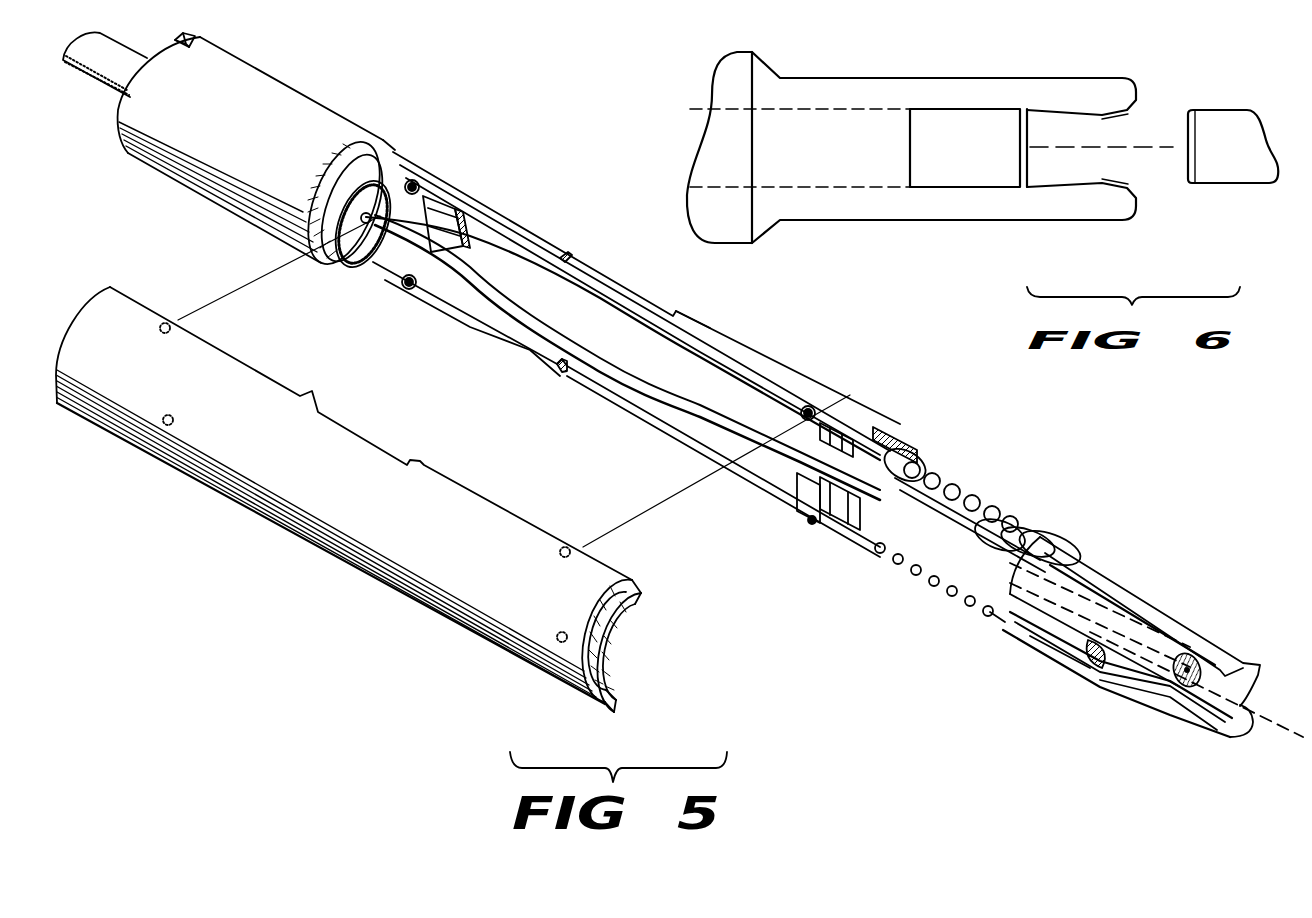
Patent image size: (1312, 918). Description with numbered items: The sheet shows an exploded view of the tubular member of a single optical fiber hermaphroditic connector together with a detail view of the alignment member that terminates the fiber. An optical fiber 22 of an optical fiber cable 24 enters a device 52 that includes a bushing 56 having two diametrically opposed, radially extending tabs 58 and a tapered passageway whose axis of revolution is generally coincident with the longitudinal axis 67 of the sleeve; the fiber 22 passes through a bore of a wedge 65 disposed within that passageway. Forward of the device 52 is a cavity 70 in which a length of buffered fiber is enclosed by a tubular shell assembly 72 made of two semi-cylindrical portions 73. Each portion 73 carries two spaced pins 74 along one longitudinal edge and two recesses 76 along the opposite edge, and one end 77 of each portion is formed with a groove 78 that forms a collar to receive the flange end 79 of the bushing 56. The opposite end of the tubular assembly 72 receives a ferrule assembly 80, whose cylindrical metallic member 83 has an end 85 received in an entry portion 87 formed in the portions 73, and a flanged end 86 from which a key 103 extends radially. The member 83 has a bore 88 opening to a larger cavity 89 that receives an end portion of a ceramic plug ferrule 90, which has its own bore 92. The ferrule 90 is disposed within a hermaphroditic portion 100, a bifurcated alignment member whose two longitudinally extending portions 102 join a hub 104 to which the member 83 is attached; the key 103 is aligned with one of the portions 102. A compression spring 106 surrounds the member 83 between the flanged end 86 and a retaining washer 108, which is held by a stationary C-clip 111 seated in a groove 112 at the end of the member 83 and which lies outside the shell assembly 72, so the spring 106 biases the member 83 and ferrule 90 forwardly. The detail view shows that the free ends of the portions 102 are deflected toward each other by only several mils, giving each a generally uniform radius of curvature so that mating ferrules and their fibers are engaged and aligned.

In FIG. 5, the optical fiber 22 is at (624, 378).
In FIG. 5, the optical fiber cable 24 is at (83, 83).
In FIG. 5, the device 52 is at (306, 98).
In FIG. 5, the bushing 56 is at (350, 130).
In FIG. 5, the tab 58 is at (175, 40).
In FIG. 5, the wedge 65 is at (358, 248).
In FIG. 5, the longitudinal axis 67 is at (1289, 727).
In FIG. 5, the cavity 70 is at (632, 330).
In FIG. 5, the tubular shell assembly 72 is at (708, 318).
In FIG. 5, the semi-cylindrical portion 73 is at (755, 355).
In FIG. 5, the pin 74 is at (418, 185).
In FIG. 5, the recess 76 is at (409, 290).
In FIG. 5, the end 77 is at (420, 172).
In FIG. 5, the groove 78 is at (360, 178).
In FIG. 5, the flange end 79 is at (341, 167).
In FIG. 5, the ferrule assembly 80 is at (1055, 520).
In FIG. 5, the cylindrical metallic member 83 is at (931, 592).
In FIG. 5, the end 85 is at (858, 418).
In FIG. 5, the flanged end 86 is at (988, 614).
In FIG. 5, the entry portion 87 is at (882, 432).
In FIG. 5, the bore 88 is at (932, 488).
In FIG. 5, the cavity 89 is at (1000, 510).
In FIG. 5, the plug ferrule 90 is at (1068, 590).
In FIG. 6, the plug ferrule 90 is at (965, 110).
In FIG. 5, the bore 92 is at (1118, 610).
In FIG. 5, the hermaphroditic portion 100 is at (1078, 657).
In FIG. 6, the hermaphroditic portion 100 is at (828, 78).
In FIG. 5, the longitudinally extending portion 102 is at (1244, 707).
In FIG. 6, the longitudinally extending portion 102 is at (1088, 92).
In FIG. 5, the key 103 is at (1030, 518).
In FIG. 5, the hub 104 is at (1042, 640).
In FIG. 5, the compression spring 106 is at (978, 485).
In FIG. 5, the retaining washer 108 is at (930, 450).
In FIG. 5, the C-clip 111 is at (818, 555).
In FIG. 5, the groove 112 is at (838, 530).